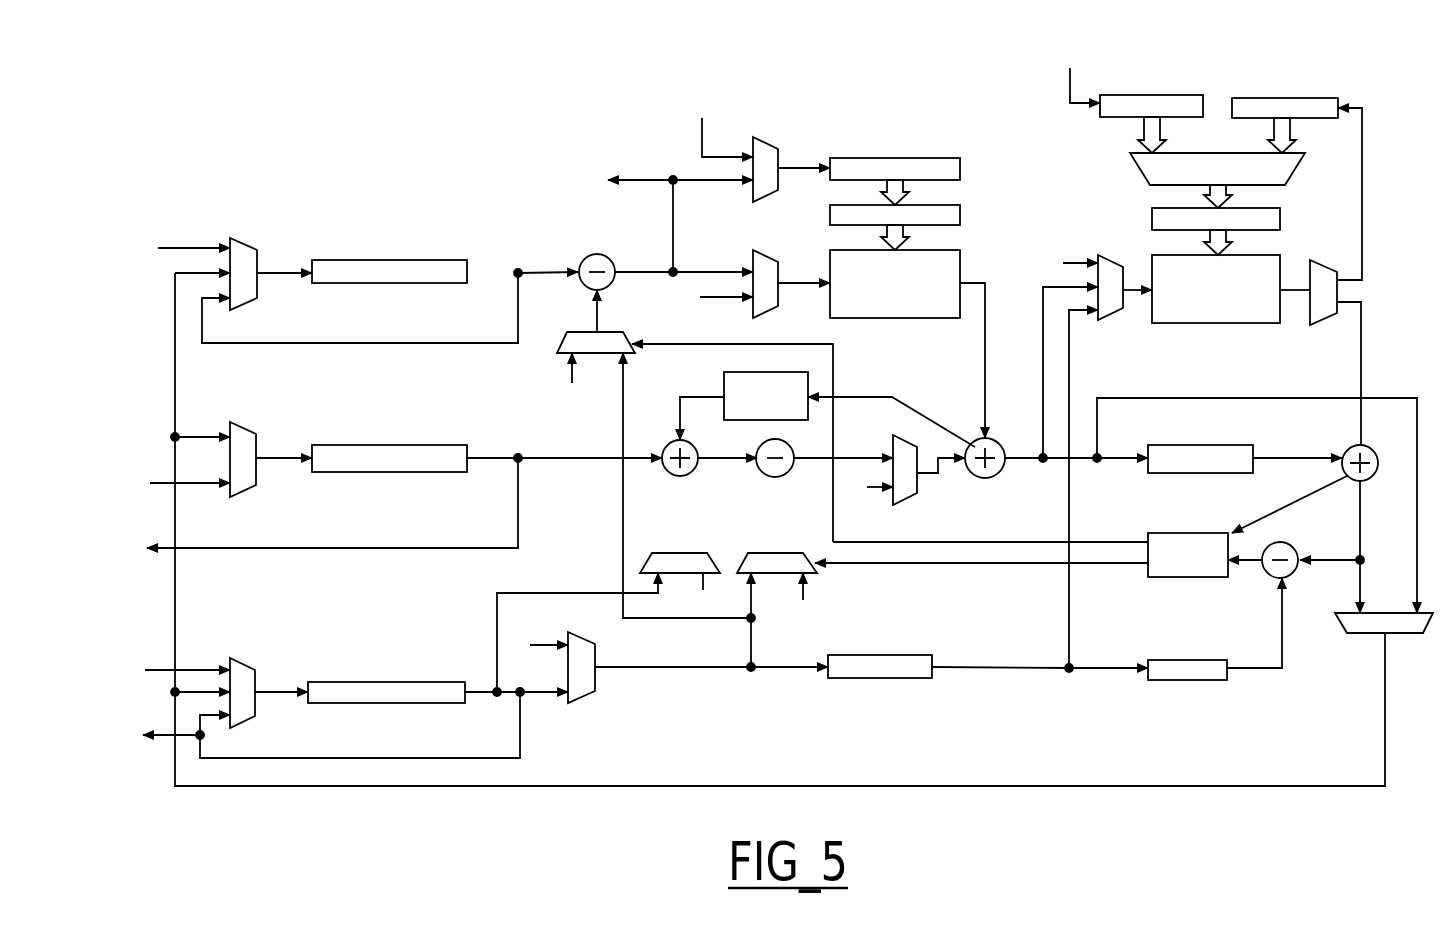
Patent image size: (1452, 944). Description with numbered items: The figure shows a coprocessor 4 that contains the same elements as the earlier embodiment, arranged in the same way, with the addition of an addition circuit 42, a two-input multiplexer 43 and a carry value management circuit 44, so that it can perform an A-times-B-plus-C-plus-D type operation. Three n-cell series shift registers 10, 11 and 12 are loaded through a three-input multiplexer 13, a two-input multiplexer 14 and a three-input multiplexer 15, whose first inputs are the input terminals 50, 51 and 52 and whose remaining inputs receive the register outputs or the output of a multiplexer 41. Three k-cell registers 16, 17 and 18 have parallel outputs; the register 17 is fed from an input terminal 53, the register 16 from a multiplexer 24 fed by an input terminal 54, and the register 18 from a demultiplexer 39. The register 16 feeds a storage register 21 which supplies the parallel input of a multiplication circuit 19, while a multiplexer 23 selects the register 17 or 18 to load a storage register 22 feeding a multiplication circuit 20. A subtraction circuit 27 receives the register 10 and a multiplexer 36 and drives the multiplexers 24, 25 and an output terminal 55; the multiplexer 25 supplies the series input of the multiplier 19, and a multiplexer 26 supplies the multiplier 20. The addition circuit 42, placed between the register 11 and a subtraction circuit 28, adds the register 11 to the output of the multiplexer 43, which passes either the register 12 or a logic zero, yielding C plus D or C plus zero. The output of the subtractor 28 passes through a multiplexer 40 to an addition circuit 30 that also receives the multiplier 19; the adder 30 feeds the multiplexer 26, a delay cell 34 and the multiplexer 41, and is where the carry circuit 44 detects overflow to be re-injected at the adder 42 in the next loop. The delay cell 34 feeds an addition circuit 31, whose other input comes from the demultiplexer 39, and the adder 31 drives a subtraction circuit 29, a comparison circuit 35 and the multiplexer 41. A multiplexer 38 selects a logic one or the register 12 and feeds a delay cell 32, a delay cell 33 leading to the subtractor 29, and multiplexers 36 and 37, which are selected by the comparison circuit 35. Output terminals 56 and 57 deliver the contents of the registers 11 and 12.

The coprocessor 4 is at (477, 142).
The shift register 10 is at (390, 260).
The shift register 11 is at (382, 472).
The shift register 12 is at (385, 682).
The multiplexer 13 is at (245, 238).
The multiplexer 14 is at (248, 497).
The multiplexer 15 is at (240, 658).
The k-cell register 16 is at (960, 168).
The k-cell register 17 is at (1150, 95).
The k-cell register 18 is at (1283, 98).
The multiplication circuit 19 is at (900, 318).
The multiplication circuit 20 is at (1203, 323).
The k-bit storage register 21 is at (960, 215).
The k-bit storage register 22 is at (1280, 218).
The multiplexer 23 is at (1295, 168).
The multiplexer 24 is at (765, 143).
The multiplexer 25 is at (765, 250).
The multiplexer 26 is at (1110, 255).
The subtraction circuit 27 is at (590, 256).
The subtraction circuit 28 is at (765, 475).
The subtraction circuit 29 is at (1270, 545).
The addition circuit 30 is at (990, 478).
The addition circuit 31 is at (1375, 475).
The delay cell 32 is at (875, 678).
The delay cell 33 is at (1185, 680).
The delay cell 34 is at (1193, 473).
The comparison circuit 35 is at (1188, 577).
The multiplexer 36 is at (557, 350).
The multiplexer 37 is at (790, 553).
The multiplexer 38 is at (580, 703).
The demultiplexer 39 is at (1327, 325).
The multiplexer 40 is at (905, 505).
The multiplexer 41 is at (1428, 622).
The addition circuit 42 is at (665, 445).
The two-input multiplexer 43 is at (650, 555).
The carry value management circuit 44 is at (724, 375).
The first input terminal 50 is at (182, 248).
The second input terminal 51 is at (197, 483).
The third input terminal 52 is at (152, 670).
The fourth input terminal 53 is at (1068, 80).
The fifth input terminal 54 is at (700, 123).
The output terminal 55 is at (635, 180).
The output terminal 56 is at (160, 552).
The output terminal 57 is at (165, 735).